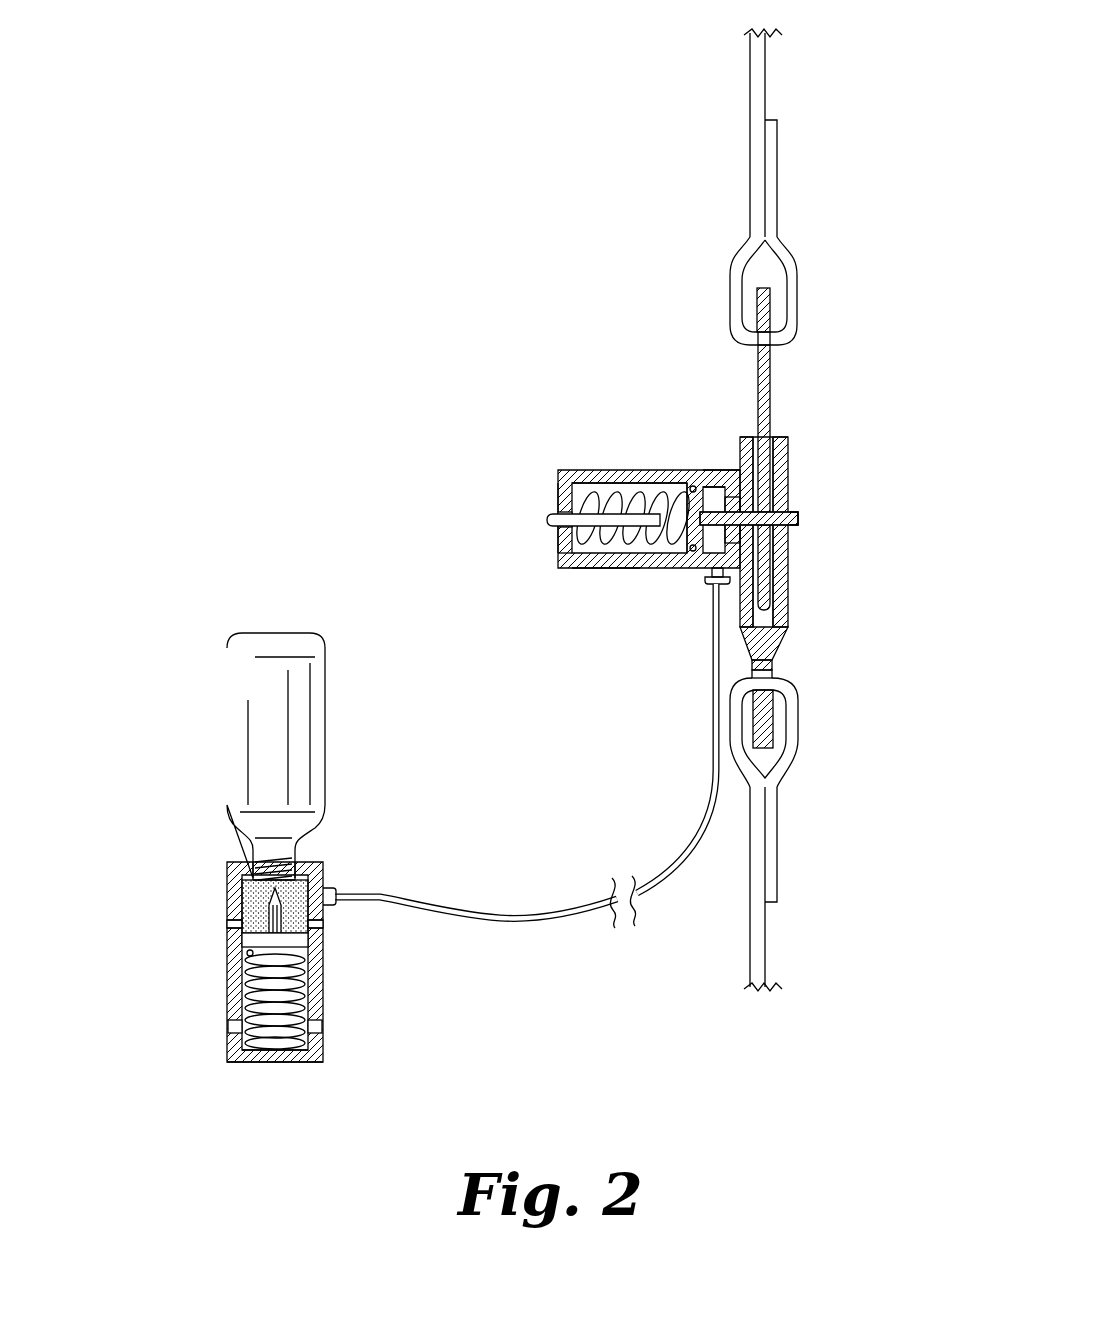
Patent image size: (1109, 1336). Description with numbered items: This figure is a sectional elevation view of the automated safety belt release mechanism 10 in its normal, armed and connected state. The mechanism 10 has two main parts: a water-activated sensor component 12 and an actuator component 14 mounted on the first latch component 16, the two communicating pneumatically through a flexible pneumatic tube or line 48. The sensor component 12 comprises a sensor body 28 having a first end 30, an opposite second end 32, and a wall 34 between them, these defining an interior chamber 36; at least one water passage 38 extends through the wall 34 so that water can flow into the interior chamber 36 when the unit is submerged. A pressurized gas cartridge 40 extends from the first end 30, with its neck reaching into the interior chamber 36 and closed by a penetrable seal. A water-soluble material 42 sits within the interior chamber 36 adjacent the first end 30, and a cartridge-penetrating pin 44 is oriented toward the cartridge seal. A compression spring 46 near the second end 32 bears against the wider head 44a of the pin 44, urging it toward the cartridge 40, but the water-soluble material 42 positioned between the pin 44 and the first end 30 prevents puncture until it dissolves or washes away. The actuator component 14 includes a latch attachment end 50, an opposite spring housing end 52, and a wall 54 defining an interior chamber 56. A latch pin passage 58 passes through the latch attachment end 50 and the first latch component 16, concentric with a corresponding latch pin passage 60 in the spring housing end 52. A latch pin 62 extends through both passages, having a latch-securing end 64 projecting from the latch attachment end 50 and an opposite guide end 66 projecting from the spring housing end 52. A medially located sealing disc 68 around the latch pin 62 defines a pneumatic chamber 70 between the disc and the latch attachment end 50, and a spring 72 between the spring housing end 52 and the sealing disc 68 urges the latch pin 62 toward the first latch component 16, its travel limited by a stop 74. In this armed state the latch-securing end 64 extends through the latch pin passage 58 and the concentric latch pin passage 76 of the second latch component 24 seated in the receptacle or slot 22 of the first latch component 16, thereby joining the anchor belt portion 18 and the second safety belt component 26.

The automated safety belt release mechanism 10 is at (137, 1053).
The sensor component 12 is at (375, 843).
The actuator component 14 is at (558, 470).
The first latch component 16 is at (790, 610).
The first or anchor belt portion 18 is at (778, 878).
The receptacle or slot 22 is at (779, 437).
The second latch component 24 is at (758, 395).
The second safety belt component 26 is at (750, 157).
The sensor body 28 is at (323, 993).
The first end 30 is at (227, 862).
The second end 32 is at (297, 1062).
The wall 34 is at (232, 975).
The interior chamber 36 is at (240, 1008).
The water passage 38 is at (235, 925).
The pressurized gas cartridge 40 is at (247, 638).
The water-soluble material 42 is at (240, 903).
The cartridge-penetrating pin 44 is at (242, 888).
The wider head 44a is at (312, 942).
The compression spring 46 is at (262, 1045).
The flexible pneumatic tube or line 48 is at (672, 852).
The latch attachment end 50 is at (740, 470).
The spring housing end 52 is at (552, 560).
The wall 54 is at (627, 470).
The interior chamber 56 is at (605, 490).
The latch pin passage 58 is at (797, 515).
The latch pin passage 60 is at (555, 505).
The latch pin 62 is at (640, 560).
The latch-securing end 64 is at (800, 525).
The guide end 66 is at (545, 519).
The sealing disc 68 is at (690, 568).
The pneumatic chamber 70 is at (722, 495).
The spring 72 is at (612, 560).
The stop 74 is at (785, 556).
The latch pin passage 76 is at (790, 500).